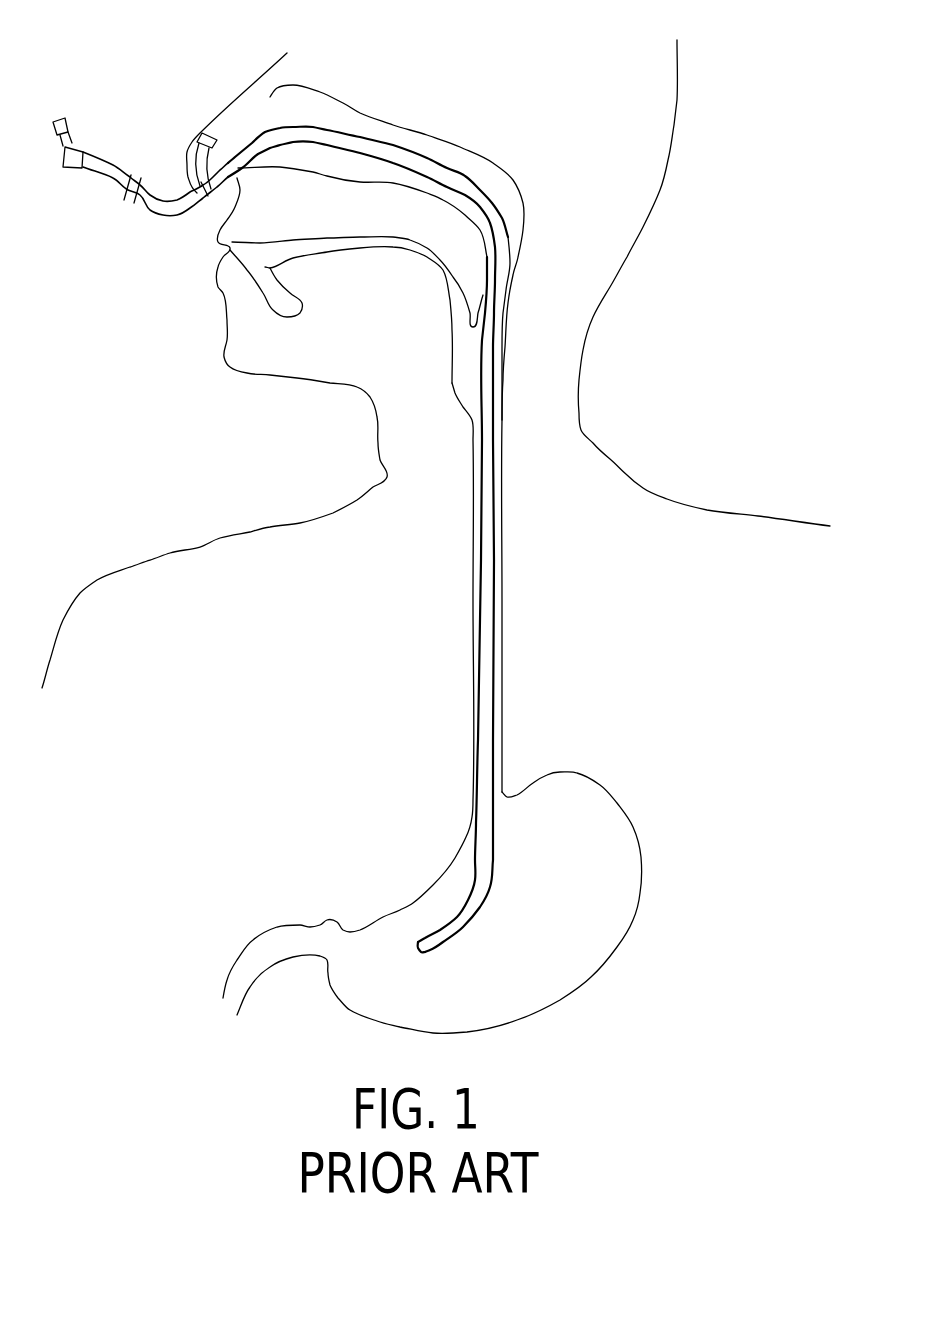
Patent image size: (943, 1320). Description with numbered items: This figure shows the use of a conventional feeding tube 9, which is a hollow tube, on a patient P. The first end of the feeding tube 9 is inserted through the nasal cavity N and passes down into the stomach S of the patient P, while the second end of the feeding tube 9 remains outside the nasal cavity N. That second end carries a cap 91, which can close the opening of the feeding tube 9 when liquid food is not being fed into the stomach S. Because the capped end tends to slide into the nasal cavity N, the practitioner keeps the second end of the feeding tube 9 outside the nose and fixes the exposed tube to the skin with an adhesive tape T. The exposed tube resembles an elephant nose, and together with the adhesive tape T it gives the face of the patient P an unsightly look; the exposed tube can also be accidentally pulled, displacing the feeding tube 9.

The cap 91 is at (72, 118).
The feeding tube 9 is at (114, 175).
The adhesive tape T is at (199, 130).
The nasal cavity N is at (271, 96).
The stomach S is at (392, 927).
The patient P is at (625, 485).